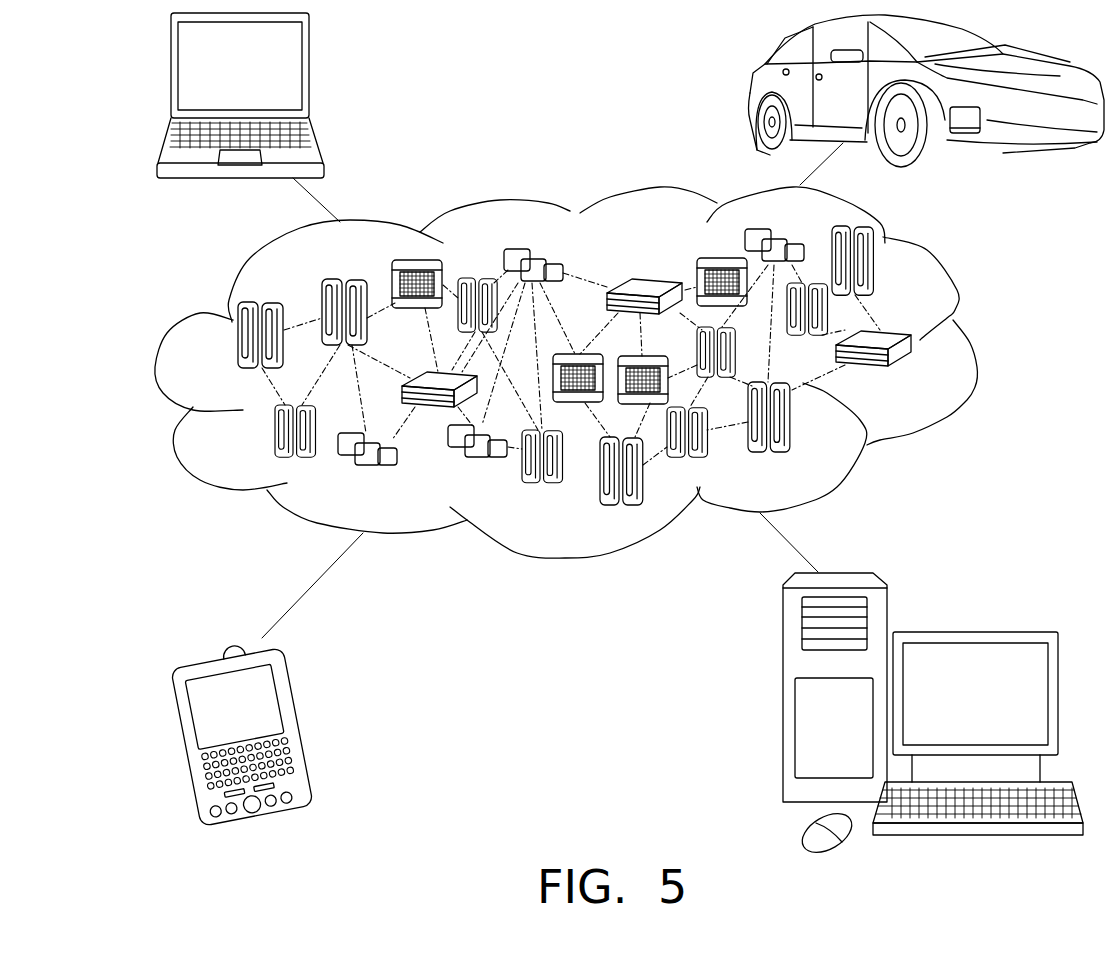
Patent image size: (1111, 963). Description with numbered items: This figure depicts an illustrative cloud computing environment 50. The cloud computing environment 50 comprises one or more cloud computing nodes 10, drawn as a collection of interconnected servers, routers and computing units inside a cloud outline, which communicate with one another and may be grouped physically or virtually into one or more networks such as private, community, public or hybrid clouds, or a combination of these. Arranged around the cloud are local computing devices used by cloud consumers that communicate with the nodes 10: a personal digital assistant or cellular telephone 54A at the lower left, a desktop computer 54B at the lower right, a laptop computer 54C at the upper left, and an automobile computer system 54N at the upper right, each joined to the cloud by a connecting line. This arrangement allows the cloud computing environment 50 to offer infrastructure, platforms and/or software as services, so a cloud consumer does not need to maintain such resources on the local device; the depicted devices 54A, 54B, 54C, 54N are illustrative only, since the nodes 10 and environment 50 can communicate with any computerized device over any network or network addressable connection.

The cloud computing environment 50 is at (970, 343).
The cloud computing nodes 10 is at (918, 376).
The personal digital assistant or cellular telephone 54A is at (297, 727).
The desktop computer 54B is at (970, 628).
The laptop computer 54C is at (310, 74).
The automobile computer system 54N is at (752, 93).